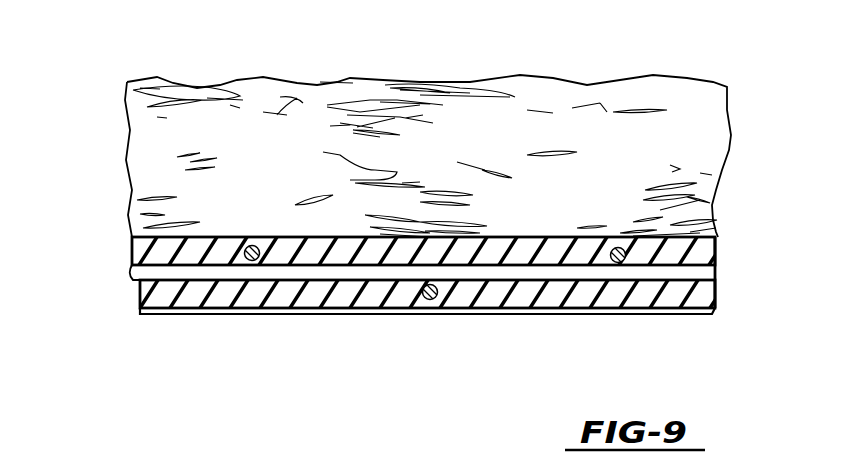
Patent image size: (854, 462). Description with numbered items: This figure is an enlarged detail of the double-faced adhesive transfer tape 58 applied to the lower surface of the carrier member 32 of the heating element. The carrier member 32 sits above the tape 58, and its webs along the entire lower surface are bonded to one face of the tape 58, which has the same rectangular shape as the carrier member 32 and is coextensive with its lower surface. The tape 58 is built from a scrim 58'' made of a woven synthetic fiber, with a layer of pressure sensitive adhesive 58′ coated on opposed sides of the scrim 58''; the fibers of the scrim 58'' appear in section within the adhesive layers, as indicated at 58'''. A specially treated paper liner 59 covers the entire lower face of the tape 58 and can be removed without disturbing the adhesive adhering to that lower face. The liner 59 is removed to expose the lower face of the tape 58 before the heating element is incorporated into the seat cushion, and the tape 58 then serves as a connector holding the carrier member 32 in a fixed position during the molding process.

The carrier member 32 is at (680, 92).
The double-faced adhesive transfer tape 58 is at (396, 320).
The layer of pressure sensitive adhesive 58′ is at (716, 297).
The scrim 58'' is at (173, 213).
The fiber in facing layer 58''' is at (616, 213).
The paper liner 59 is at (318, 314).